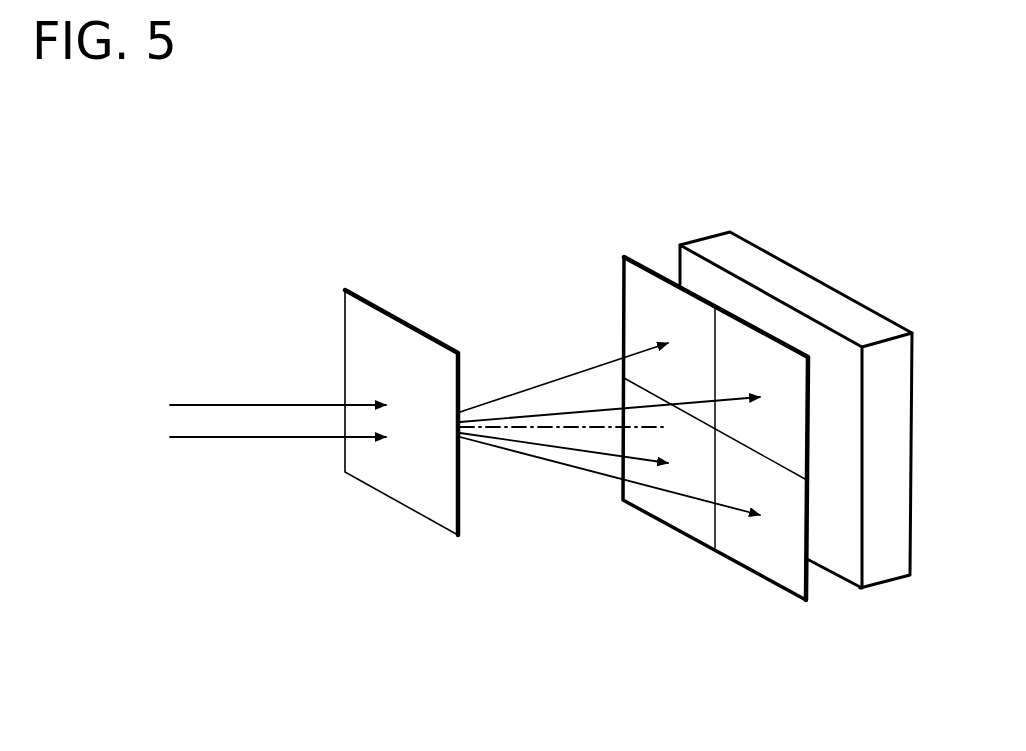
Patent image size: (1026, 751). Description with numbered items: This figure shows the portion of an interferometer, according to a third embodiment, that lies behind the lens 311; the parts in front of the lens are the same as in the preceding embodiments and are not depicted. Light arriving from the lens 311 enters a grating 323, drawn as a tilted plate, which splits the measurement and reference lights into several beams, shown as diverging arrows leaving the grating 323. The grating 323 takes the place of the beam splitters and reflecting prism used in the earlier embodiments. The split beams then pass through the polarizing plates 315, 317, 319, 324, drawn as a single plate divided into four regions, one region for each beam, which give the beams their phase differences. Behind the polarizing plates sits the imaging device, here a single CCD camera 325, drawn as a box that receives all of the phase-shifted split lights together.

The lens 311 is at (226, 386).
The grating 323 is at (396, 313).
The polarizing plate 315 is at (657, 268).
The polarizing plate 317 is at (748, 317).
The polarizing plate 319 is at (655, 523).
The polarizing plate 324 is at (760, 581).
The CCD camera 325 is at (845, 308).